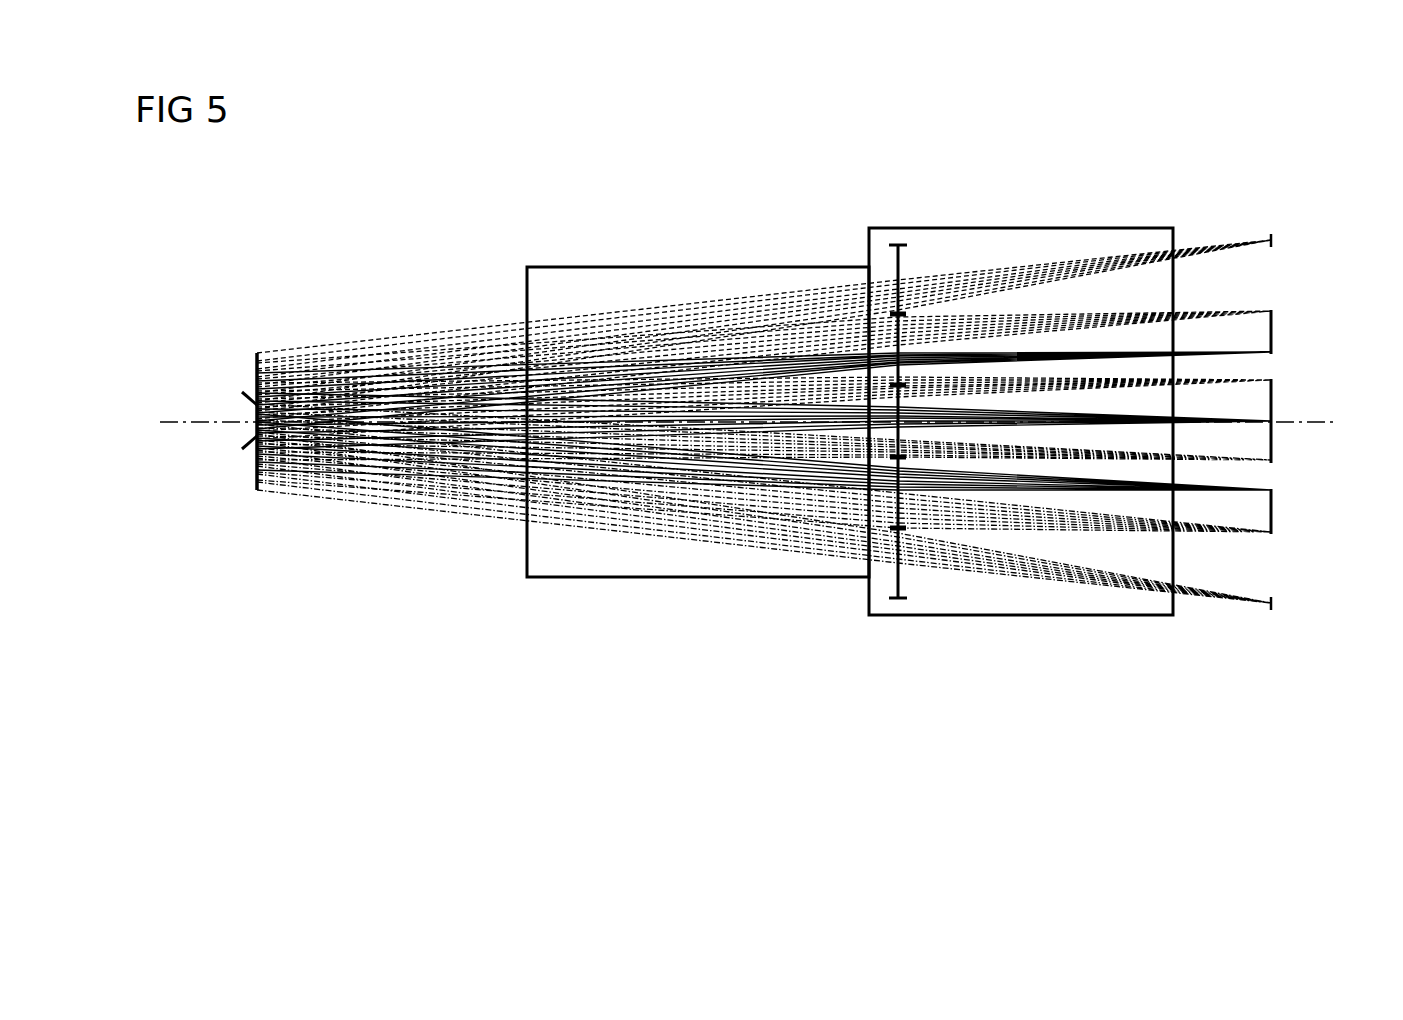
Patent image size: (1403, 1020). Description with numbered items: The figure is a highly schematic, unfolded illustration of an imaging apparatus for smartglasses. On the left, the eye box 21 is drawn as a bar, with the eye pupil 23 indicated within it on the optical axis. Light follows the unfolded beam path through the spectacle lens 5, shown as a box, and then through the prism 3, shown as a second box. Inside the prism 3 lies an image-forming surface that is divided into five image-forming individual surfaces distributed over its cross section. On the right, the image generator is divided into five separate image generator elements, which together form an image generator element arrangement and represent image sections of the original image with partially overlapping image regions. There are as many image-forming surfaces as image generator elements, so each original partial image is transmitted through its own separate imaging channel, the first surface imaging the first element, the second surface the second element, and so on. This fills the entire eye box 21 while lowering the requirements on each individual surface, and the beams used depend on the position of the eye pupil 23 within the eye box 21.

The eye box 21 is at (257, 370).
The eye pupil 23 is at (236, 437).
The spectacle lens 5 is at (869, 717).
The prism 3 is at (1173, 717).